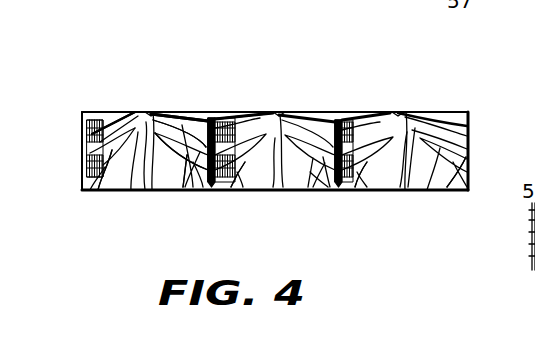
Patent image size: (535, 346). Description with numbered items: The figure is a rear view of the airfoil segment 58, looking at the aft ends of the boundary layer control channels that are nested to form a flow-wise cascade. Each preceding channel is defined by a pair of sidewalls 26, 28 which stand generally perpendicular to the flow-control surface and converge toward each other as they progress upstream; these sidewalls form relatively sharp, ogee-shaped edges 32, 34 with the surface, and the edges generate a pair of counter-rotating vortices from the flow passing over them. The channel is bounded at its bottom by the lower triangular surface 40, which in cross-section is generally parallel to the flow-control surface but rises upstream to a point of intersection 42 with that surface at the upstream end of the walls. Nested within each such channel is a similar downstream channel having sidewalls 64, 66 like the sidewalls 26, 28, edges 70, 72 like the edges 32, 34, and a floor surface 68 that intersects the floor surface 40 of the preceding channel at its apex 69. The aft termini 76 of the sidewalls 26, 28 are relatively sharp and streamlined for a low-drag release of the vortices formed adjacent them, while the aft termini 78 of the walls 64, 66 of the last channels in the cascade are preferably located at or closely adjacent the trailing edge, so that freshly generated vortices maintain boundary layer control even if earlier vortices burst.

The sidewall 26 is at (530, 222).
The sidewall 28 is at (468, 140).
The sharp edge 32 is at (381, 112).
The sharp edge 34 is at (465, 112).
The lower triangular surface 40 is at (447, 112).
The point of intersection 42 is at (401, 112).
The airfoil segment 58 is at (340, 112).
The sidewall 64 is at (360, 166).
The sidewall 66 is at (452, 190).
The floor surface 68 is at (405, 190).
The apex 69 is at (412, 166).
The edge 70 is at (408, 190).
The edge 72 is at (468, 162).
The aft terminus 76 is at (336, 112).
The aft terminus 78 is at (352, 190).